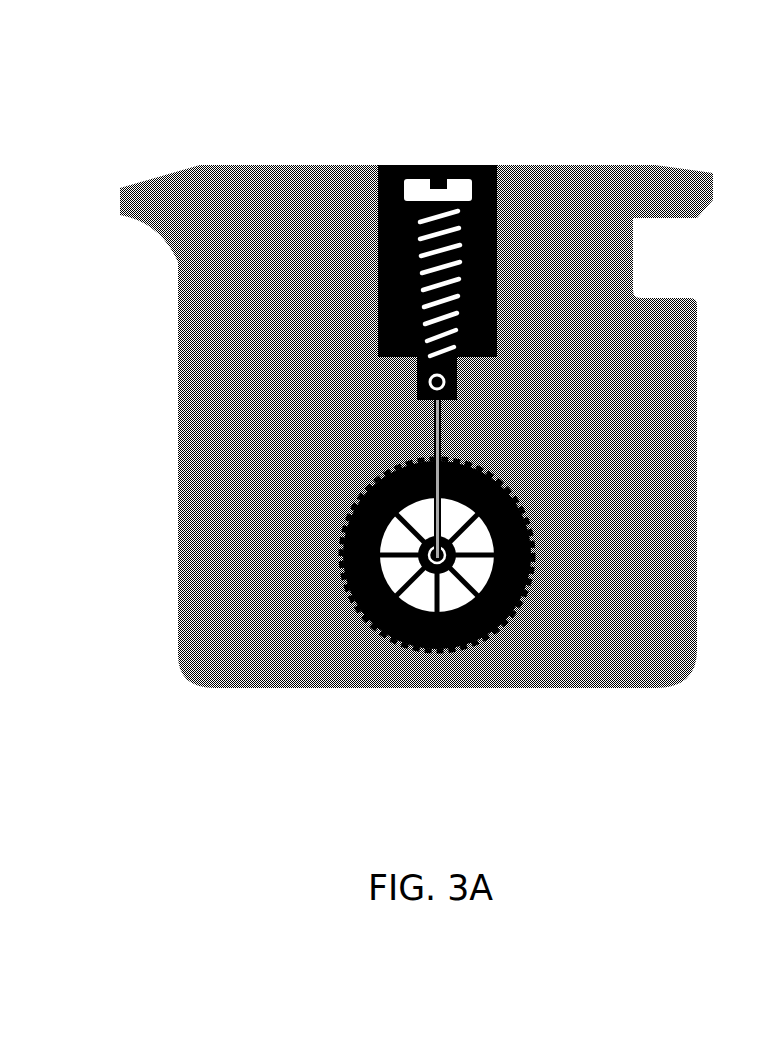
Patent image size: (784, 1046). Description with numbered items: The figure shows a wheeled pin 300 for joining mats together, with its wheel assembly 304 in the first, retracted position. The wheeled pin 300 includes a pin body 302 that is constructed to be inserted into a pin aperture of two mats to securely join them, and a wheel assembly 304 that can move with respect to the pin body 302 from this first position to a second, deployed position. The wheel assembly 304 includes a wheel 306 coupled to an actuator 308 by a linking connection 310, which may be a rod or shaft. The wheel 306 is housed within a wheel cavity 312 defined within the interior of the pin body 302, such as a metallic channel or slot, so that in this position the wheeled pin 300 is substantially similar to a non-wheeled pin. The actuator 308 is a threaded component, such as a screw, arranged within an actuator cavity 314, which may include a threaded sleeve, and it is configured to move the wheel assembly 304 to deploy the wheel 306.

The wheeled pin 300 is at (199, 117).
The pin body 302 is at (670, 480).
The wheel assembly 304 is at (409, 165).
The wheel 306 is at (436, 650).
The actuator 308 is at (458, 190).
The linking connection 310 is at (440, 437).
The wheel cavity 312 is at (527, 655).
The actuator cavity 314 is at (488, 258).